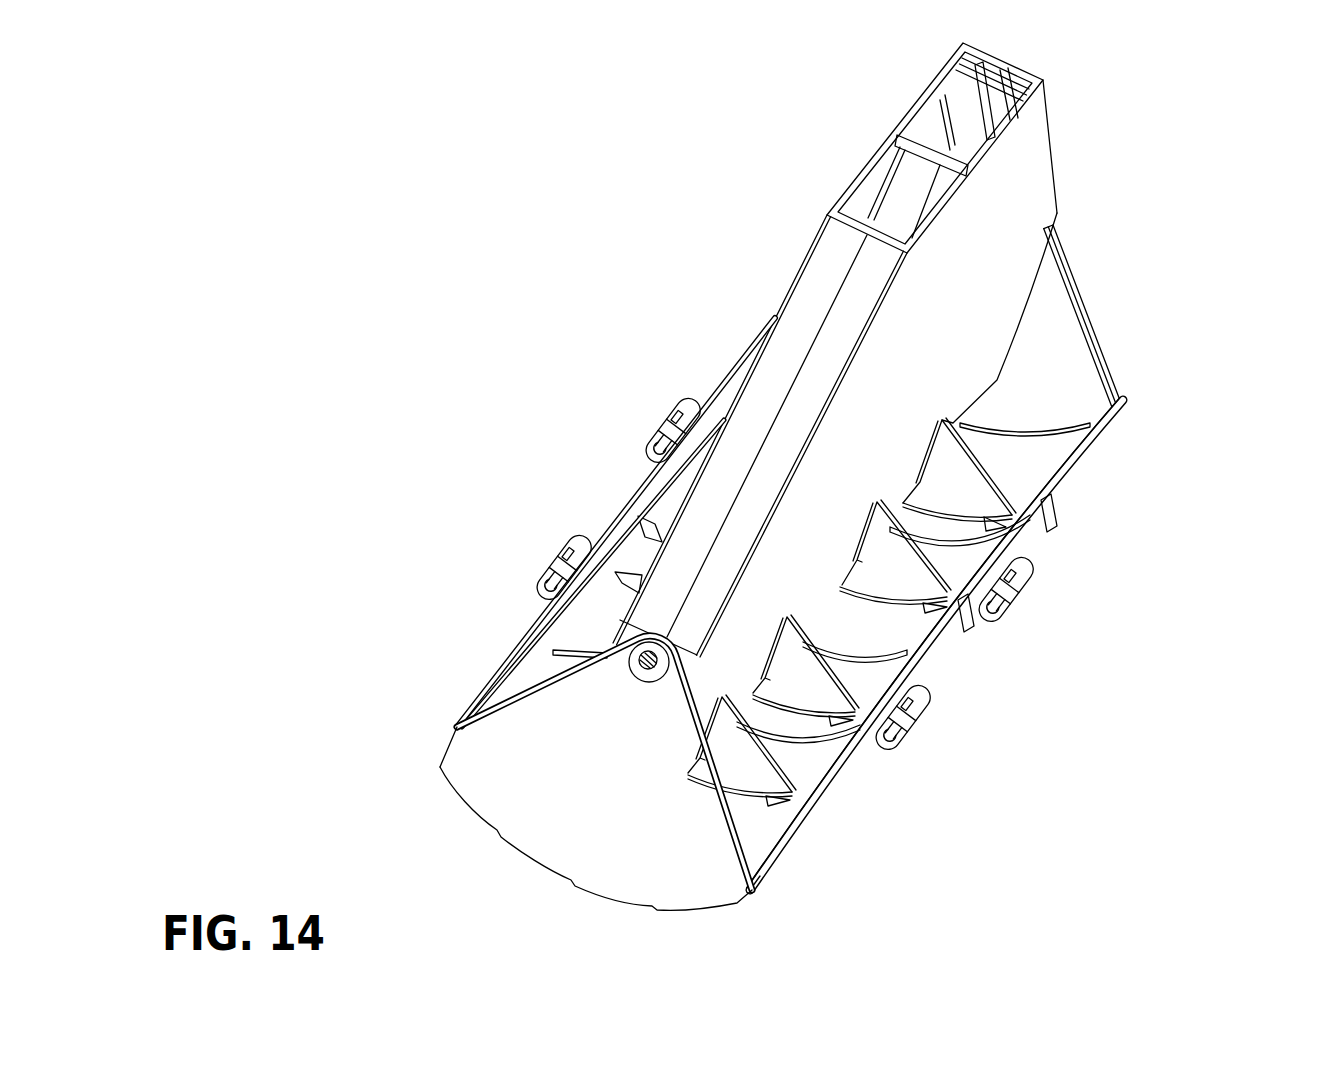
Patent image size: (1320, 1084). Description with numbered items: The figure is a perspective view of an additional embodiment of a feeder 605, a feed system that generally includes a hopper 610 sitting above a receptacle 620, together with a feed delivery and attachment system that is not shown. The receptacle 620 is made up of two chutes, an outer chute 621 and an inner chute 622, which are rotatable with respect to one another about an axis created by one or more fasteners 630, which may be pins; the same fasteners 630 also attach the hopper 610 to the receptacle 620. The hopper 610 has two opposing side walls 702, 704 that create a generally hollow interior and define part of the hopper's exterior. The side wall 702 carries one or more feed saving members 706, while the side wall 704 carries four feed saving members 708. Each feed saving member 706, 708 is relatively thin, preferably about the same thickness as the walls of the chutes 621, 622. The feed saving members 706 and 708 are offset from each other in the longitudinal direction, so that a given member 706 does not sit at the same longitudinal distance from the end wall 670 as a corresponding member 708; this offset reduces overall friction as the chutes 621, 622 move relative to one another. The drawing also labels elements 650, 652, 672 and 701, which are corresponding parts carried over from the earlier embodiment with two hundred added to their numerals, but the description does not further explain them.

The feeder 605 is at (1100, 228).
The hopper 610 is at (758, 322).
The side wall 702 is at (807, 257).
The side wall 704 is at (1020, 178).
The side rail 652 is at (1093, 305).
The inner surface 672 is at (1043, 337).
The feed saving members 706 is at (633, 577).
The inner chute 622 is at (455, 714).
The receptacle 620 is at (806, 833).
The clip 701 is at (667, 417).
The feed saving members 708 is at (953, 490).
The end wall 670 is at (507, 693).
The fasteners 630 is at (647, 672).
The bucket 650 is at (580, 800).
The outer chute 621 is at (622, 855).